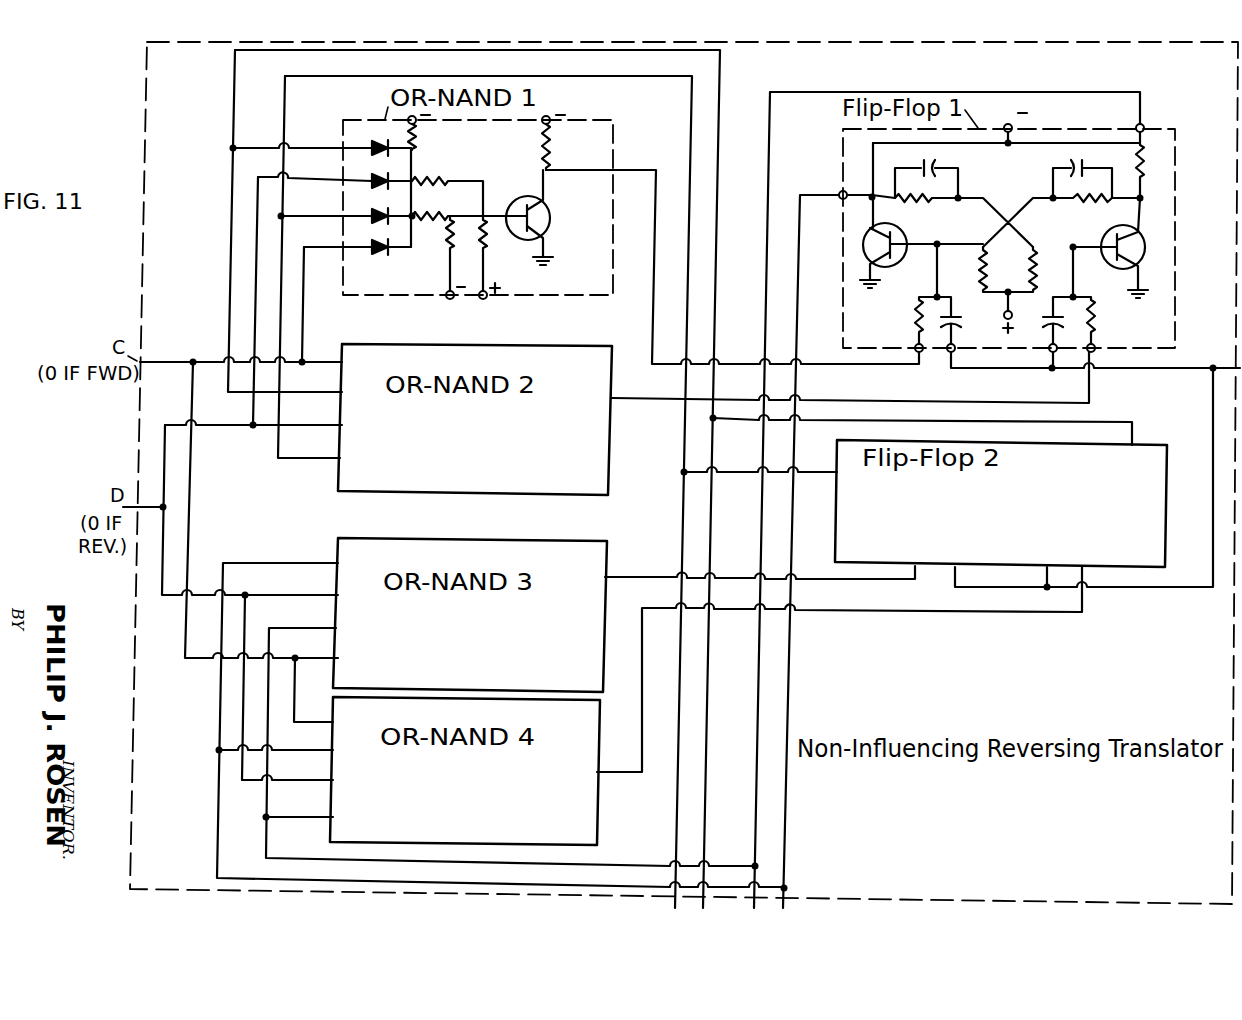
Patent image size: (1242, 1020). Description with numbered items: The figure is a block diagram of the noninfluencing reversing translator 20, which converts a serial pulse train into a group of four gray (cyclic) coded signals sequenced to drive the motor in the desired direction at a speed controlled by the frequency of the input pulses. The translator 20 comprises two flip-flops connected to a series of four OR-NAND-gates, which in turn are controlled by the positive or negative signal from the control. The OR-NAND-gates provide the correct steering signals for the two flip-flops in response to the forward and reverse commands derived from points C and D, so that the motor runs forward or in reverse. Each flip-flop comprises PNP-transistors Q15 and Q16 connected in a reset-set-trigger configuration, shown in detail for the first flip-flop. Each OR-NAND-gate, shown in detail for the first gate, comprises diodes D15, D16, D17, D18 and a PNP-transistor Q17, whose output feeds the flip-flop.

The noninfluencing reversing translator 20 is at (147, 99).
The diode D15 is at (394, 140).
The diode D16 is at (372, 176).
The diode D17 is at (370, 212).
The diode D18 is at (370, 244).
The PNP-transistor Q15 is at (888, 262).
The PNP-transistor Q16 is at (1145, 254).
The PNP-transistor Q17 is at (528, 198).